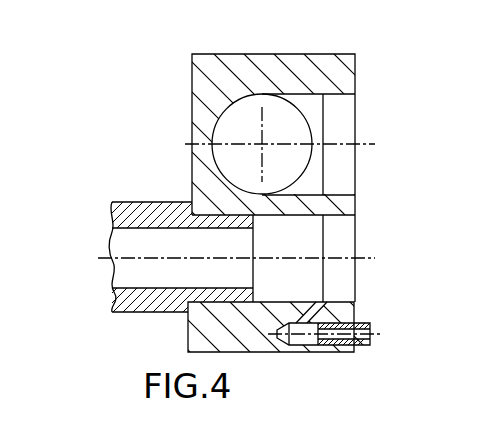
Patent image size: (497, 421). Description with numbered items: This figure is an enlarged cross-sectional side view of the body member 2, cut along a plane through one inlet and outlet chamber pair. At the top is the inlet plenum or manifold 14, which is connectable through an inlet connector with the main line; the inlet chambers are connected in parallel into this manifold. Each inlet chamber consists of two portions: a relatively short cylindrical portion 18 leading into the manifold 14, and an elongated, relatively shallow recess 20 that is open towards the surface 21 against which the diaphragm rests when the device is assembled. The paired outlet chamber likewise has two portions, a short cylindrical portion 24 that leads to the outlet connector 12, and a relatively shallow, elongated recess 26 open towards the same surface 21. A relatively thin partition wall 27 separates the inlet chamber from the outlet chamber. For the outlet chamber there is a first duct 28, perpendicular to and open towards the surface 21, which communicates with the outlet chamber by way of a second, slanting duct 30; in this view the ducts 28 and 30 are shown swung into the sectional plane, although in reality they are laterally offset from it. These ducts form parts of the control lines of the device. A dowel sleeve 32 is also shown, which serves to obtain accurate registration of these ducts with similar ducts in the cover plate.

The body member 2 is at (193, 70).
The outlet connector 12 is at (157, 202).
The inlet plenum or manifold 14 is at (258, 138).
The cylindrical portion 18 is at (327, 84).
The recess 20 is at (338, 171).
The surface 21 is at (357, 62).
The cylindrical portion 24 is at (285, 248).
The recess 26 is at (338, 248).
The partition wall 27 is at (334, 209).
The first duct 28 is at (302, 352).
The second duct 30 is at (326, 302).
The dowel sleeve 32 is at (376, 334).